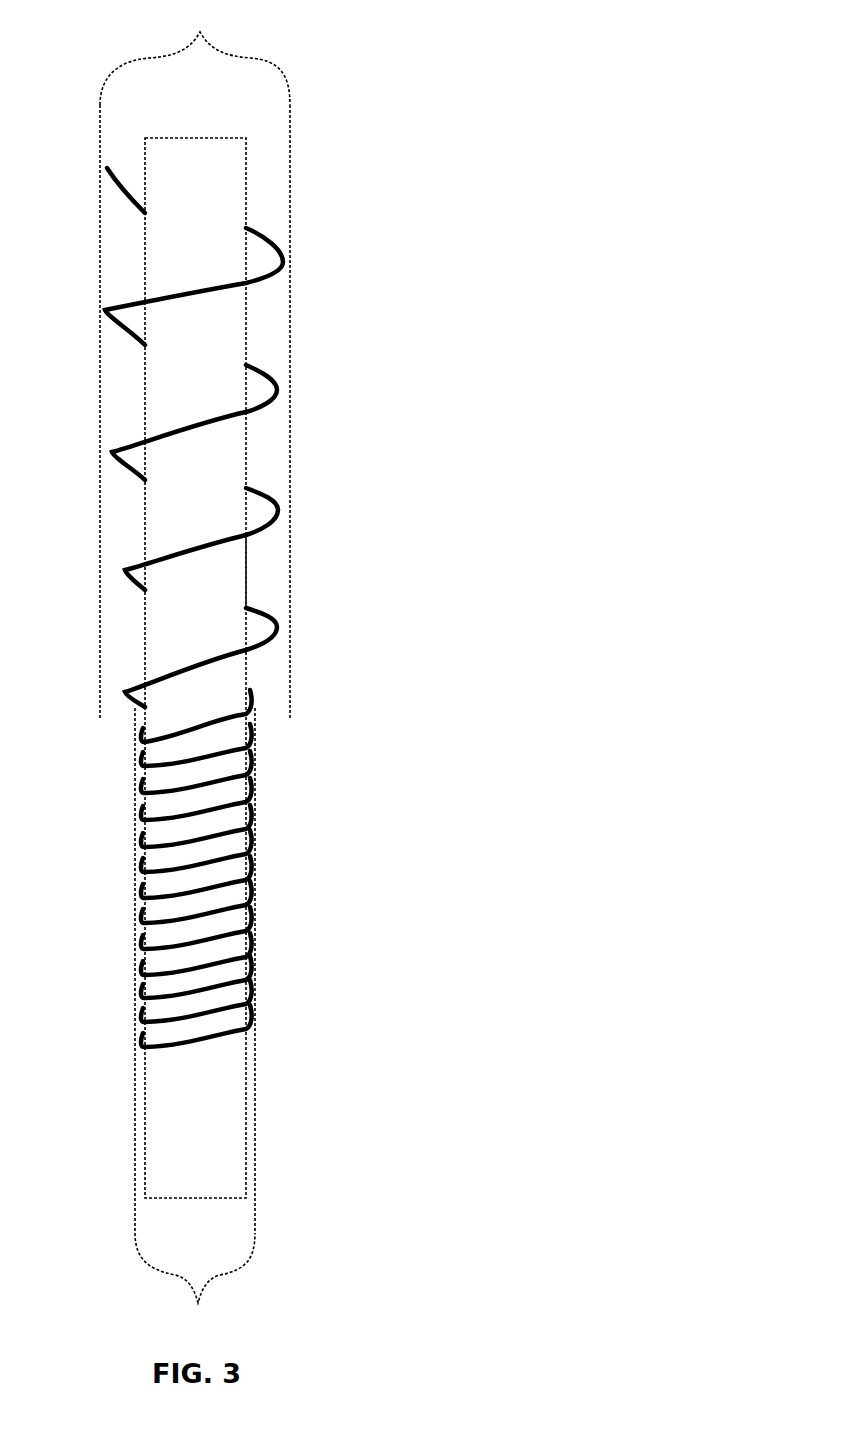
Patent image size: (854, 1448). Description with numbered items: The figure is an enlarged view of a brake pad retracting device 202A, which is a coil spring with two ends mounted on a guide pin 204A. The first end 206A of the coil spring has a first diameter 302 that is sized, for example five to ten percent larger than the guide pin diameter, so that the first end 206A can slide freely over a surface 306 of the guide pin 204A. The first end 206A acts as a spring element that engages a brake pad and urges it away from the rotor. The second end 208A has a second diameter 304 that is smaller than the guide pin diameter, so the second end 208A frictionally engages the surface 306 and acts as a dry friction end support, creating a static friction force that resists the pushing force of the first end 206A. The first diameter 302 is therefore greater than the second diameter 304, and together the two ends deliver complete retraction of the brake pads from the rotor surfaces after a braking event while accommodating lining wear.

The brake pad retracting device 202A is at (445, 47).
The first diameter 302 is at (195, 56).
The second diameter 304 is at (195, 1020).
The guide pin 204A is at (223, 217).
The first end 206A is at (279, 246).
The second end 208A is at (145, 753).
The surface 306 is at (246, 571).